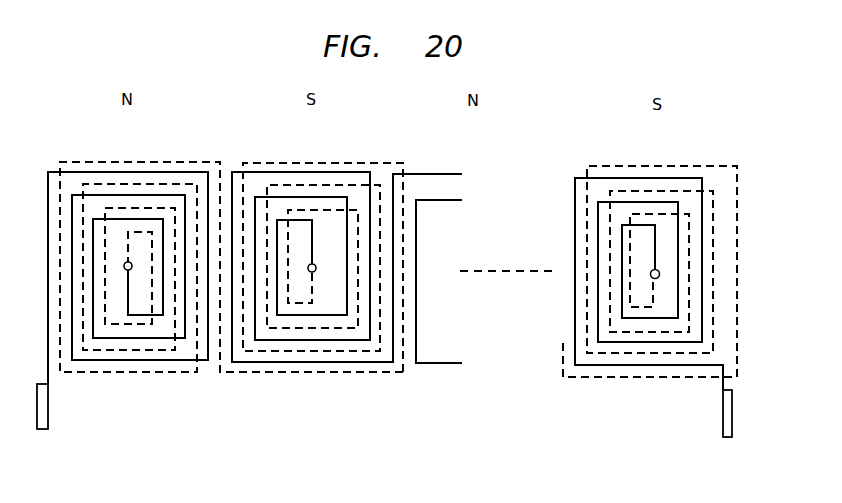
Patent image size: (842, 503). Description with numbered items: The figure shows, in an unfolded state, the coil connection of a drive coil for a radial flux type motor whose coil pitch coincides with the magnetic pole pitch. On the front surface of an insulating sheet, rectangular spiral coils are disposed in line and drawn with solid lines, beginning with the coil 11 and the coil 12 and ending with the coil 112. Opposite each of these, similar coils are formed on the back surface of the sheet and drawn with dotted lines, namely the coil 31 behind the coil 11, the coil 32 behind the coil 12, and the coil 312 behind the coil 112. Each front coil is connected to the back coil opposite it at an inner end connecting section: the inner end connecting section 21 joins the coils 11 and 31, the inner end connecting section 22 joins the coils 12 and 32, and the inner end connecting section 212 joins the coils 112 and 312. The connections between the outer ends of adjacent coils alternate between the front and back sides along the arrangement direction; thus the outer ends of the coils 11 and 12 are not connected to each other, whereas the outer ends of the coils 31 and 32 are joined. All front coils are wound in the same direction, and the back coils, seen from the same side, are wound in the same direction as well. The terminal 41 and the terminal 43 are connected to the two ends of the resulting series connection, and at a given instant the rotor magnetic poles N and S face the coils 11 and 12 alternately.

The rectangular spiral coil 11 is at (122, 172).
The rectangular spiral coil 31 is at (175, 162).
The inner end connecting section 21 is at (126, 270).
The terminal 41 is at (48, 405).
The rectangular spiral coil 12 is at (305, 172).
The rectangular spiral coil 32 is at (358, 163).
The inner end connecting section 22 is at (314, 272).
The rectangular spiral coil 112 is at (617, 178).
The rectangular spiral coil 312 is at (681, 166).
The inner end connecting section 212 is at (657, 278).
The terminal 43 is at (723, 425).